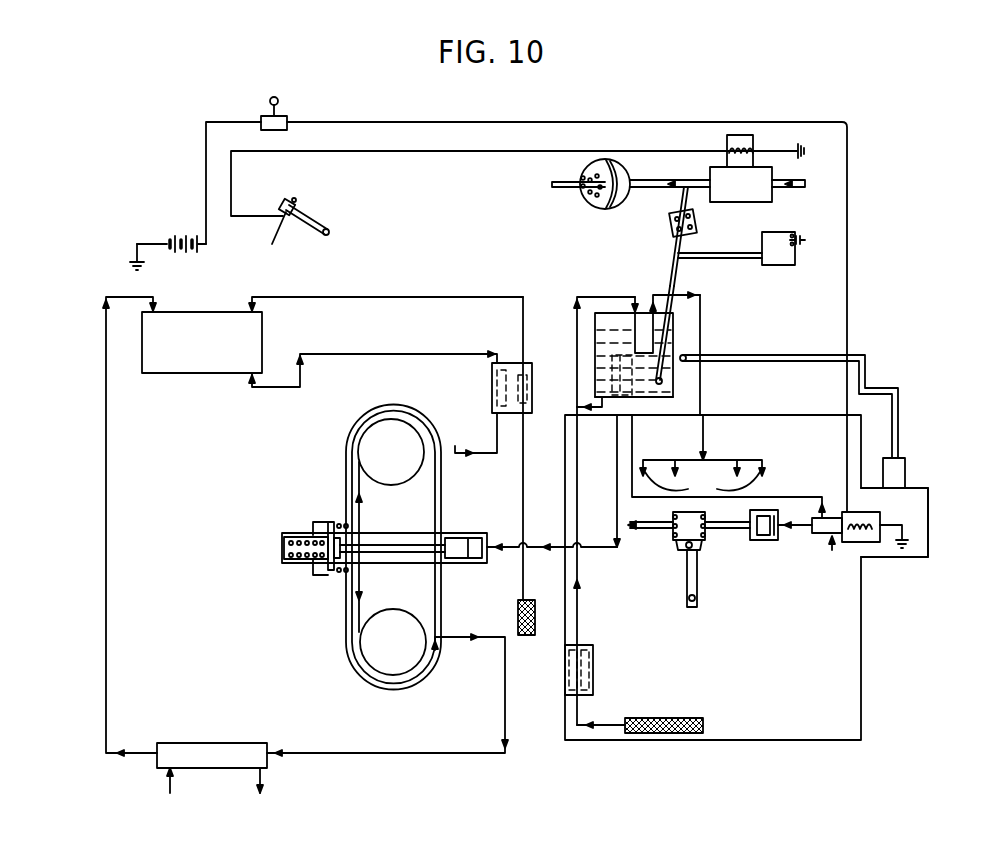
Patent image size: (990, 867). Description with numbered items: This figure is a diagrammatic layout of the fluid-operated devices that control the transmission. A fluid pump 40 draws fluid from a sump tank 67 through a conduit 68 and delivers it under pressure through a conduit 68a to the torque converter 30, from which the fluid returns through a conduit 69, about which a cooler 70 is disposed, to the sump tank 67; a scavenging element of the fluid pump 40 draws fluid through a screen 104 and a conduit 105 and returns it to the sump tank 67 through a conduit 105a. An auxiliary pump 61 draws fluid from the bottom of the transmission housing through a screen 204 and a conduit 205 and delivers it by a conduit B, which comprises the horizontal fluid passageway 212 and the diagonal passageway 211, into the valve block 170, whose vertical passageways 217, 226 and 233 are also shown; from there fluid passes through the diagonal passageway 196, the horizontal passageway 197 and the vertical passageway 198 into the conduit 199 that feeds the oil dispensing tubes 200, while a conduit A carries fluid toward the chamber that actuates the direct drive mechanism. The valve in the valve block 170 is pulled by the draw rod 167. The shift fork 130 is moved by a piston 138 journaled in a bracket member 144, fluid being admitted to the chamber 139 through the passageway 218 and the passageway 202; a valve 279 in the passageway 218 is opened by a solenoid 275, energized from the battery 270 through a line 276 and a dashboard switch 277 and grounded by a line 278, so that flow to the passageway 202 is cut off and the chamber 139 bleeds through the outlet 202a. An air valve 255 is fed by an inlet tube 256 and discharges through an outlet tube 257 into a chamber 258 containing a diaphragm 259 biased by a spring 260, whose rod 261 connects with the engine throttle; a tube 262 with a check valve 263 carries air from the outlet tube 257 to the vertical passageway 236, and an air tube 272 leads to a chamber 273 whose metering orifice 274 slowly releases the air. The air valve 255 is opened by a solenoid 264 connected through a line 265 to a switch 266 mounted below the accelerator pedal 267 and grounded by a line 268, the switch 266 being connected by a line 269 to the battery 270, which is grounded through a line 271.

The torque converter 30 is at (410, 504).
The fluid pump 40 is at (491, 380).
The auxiliary pump 61 is at (594, 666).
The sump tank 67 is at (190, 374).
The conduit 68 is at (347, 355).
The conduit 68a is at (456, 446).
The conduit 69 is at (107, 598).
The cooler 70 is at (198, 742).
The screen 104 is at (527, 636).
The conduit 105 is at (522, 504).
The conduit 105a is at (404, 298).
The shift fork 130 is at (688, 569).
The piston 138 is at (762, 535).
The chamber 139 is at (775, 541).
The bracket member 144 is at (752, 541).
The draw rod 167 is at (835, 357).
The valve block 170 is at (674, 396).
The diagonal fluid passageway 196 is at (660, 309).
The horizontally extending fluid passageway 197 is at (676, 298).
The vertically extending fluid passageway 198 is at (701, 341).
The conduit 199 is at (710, 458).
The oil dispensing tubes 200 is at (702, 484).
The fluid passageway 202 is at (804, 517).
The outlet 202a is at (840, 546).
The screen 204 is at (684, 718).
The conduit 205 is at (583, 712).
The diagonal fluid passageway 211 is at (636, 297).
The horizontally extending fluid passageway 212 is at (576, 296).
The fluid passageway 217 is at (633, 438).
The horizontally extending fluid passageway 218 is at (768, 497).
The fluid passageway 226 is at (600, 410).
The fluid passageway 233 is at (587, 586).
The vertically extending fluid passageway 236 is at (663, 382).
The air valve 255 is at (738, 196).
The inlet tube 256 is at (805, 184).
The outlet tube 257 is at (652, 180).
The chamber 258 is at (624, 178).
The diaphragm 259 is at (614, 168).
The spring 260 is at (591, 176).
The rod 261 is at (556, 188).
The tube 262 is at (684, 196).
The check valve 263 is at (670, 228).
The solenoid 264 is at (738, 135).
The line 265 is at (421, 153).
The switch 266 is at (287, 200).
The accelerator pedal 267 is at (330, 230).
The line 268 is at (782, 150).
The line 269 is at (282, 250).
The battery 270 is at (199, 248).
The line 271 is at (137, 242).
The air tube 272 is at (756, 258).
The chamber 273 is at (795, 255).
The metering orifice 274 is at (805, 238).
The solenoid 275 is at (872, 512).
The line 276 is at (848, 312).
The switch 277 is at (284, 122).
The line 278 is at (905, 526).
The valve 279 is at (833, 546).
The conduit A is at (617, 506).
The conduit B is at (580, 605).